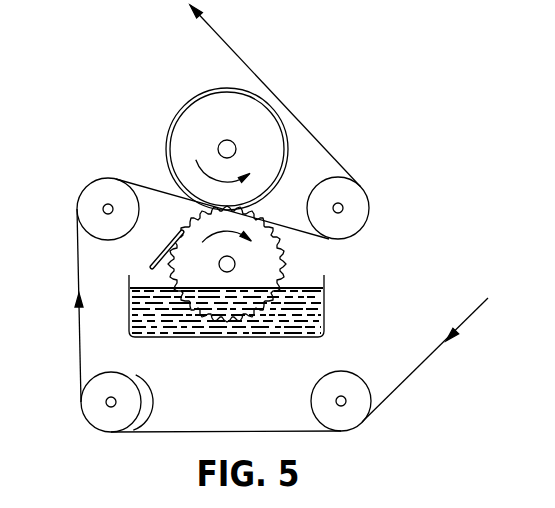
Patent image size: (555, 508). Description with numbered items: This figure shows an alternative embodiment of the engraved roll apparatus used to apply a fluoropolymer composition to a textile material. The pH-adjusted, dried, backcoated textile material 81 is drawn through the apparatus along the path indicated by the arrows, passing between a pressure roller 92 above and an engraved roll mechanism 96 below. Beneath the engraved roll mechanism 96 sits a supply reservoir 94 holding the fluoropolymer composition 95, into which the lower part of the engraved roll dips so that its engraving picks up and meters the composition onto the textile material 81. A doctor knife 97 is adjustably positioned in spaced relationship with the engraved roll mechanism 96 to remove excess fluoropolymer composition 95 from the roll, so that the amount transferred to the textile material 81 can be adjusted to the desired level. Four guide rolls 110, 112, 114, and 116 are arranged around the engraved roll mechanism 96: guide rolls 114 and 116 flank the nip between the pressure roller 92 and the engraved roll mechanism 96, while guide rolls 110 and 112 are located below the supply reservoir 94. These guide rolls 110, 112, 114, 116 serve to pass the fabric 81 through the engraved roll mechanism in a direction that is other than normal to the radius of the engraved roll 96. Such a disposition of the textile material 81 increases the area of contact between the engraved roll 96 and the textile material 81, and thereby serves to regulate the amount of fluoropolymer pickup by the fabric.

The textile material 81 is at (152, 188).
The pressure roller 92 is at (208, 95).
The supply reservoir 94 is at (139, 339).
The fluoropolymer composition 95 is at (327, 312).
The engraved roll mechanism 96 is at (288, 258).
The doctor knife 97 is at (150, 257).
The guide roll 110 is at (322, 386).
The guide roll 112 is at (143, 390).
The guide roll 114 is at (82, 198).
The guide roll 116 is at (362, 216).